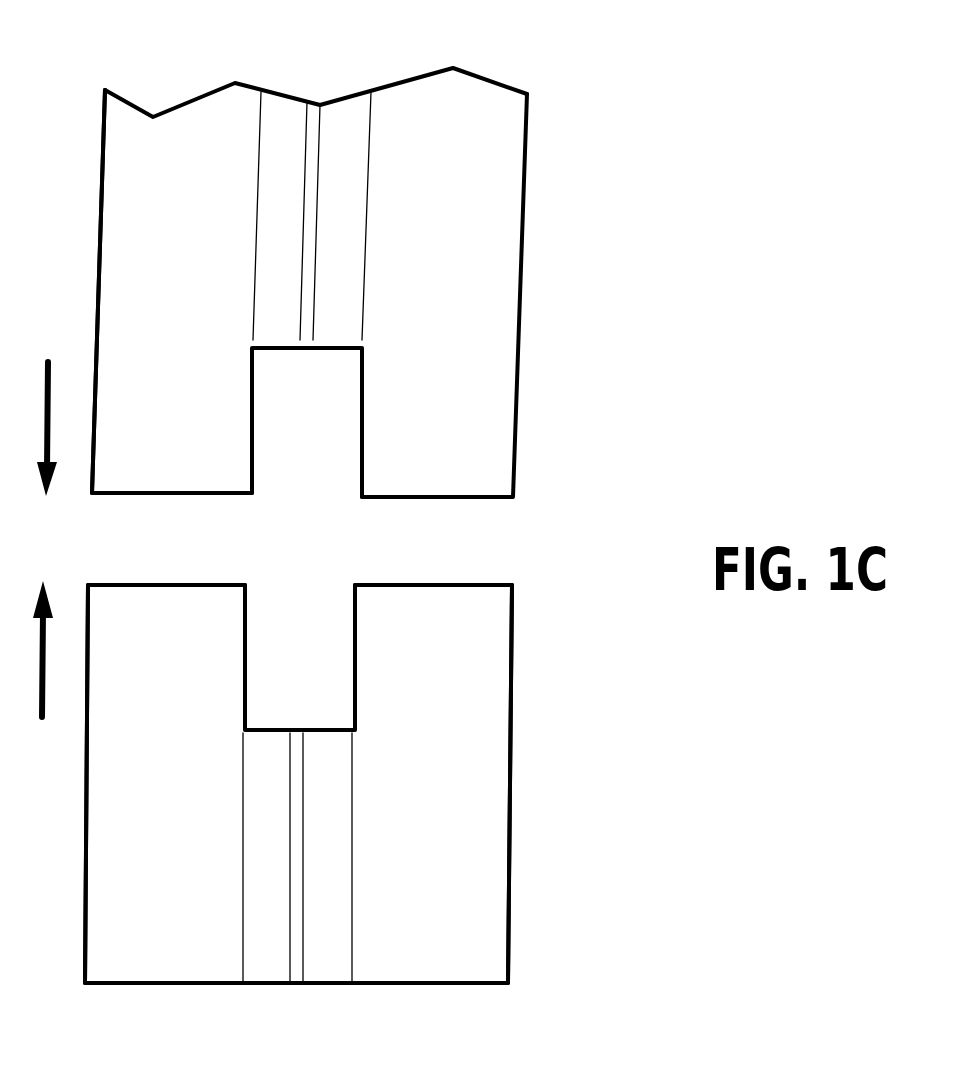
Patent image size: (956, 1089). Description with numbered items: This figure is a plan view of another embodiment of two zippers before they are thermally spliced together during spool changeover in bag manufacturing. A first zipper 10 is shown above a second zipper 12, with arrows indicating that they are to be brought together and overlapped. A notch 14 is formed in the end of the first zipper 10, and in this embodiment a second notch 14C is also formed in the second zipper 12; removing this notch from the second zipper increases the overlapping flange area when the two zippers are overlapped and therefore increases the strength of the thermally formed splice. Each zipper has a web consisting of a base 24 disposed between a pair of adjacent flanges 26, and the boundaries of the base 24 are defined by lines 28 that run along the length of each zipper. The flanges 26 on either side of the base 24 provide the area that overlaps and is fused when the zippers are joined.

The zipper 10 is at (359, 284).
The zipper 12 is at (348, 757).
The notch 14 is at (307, 462).
The second notch 14C is at (282, 615).
The base 24 is at (288, 130).
The flanges 26 is at (133, 180).
The lines 28 is at (260, 153).